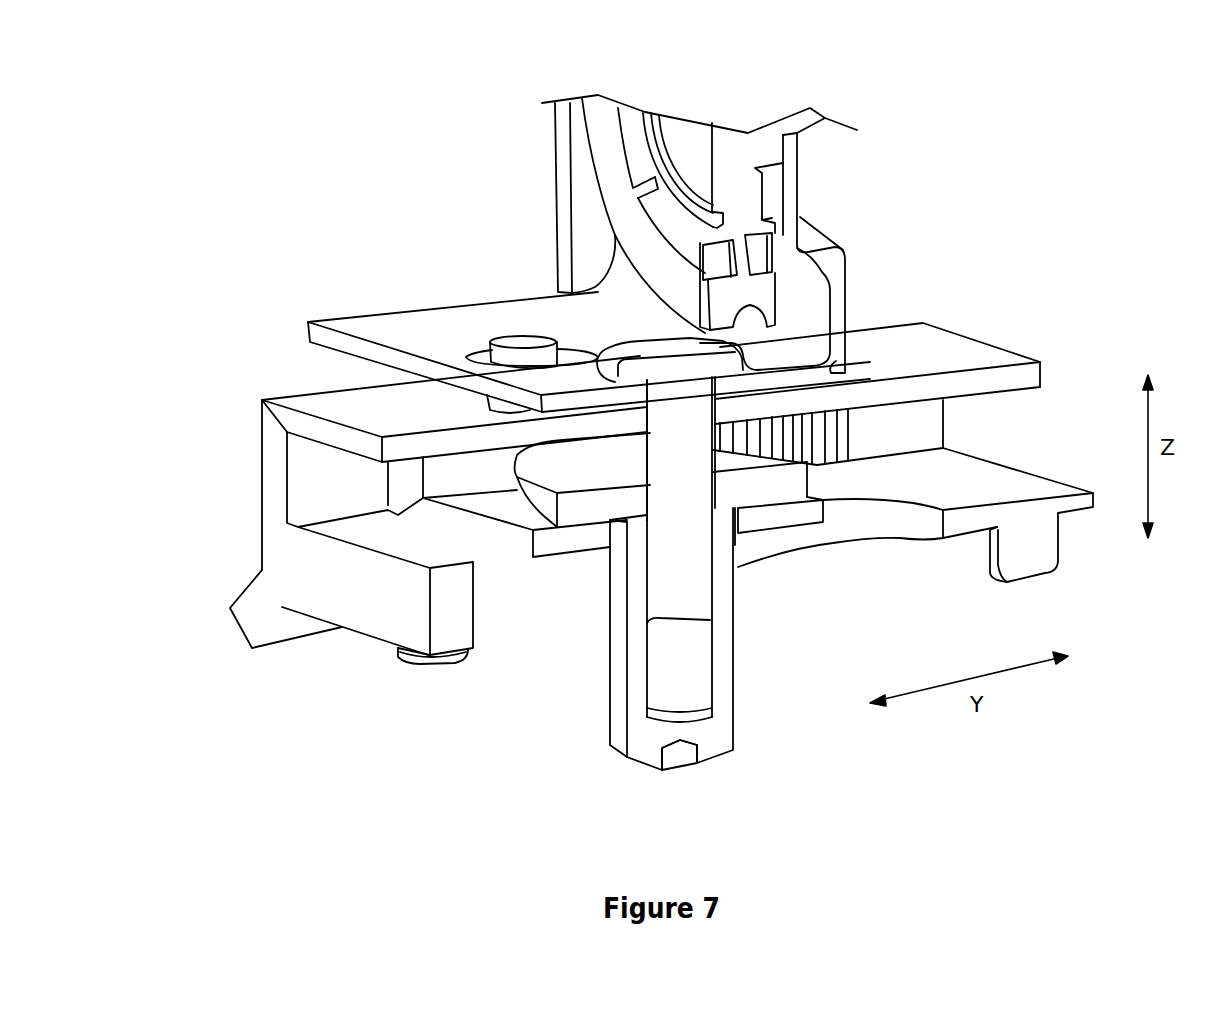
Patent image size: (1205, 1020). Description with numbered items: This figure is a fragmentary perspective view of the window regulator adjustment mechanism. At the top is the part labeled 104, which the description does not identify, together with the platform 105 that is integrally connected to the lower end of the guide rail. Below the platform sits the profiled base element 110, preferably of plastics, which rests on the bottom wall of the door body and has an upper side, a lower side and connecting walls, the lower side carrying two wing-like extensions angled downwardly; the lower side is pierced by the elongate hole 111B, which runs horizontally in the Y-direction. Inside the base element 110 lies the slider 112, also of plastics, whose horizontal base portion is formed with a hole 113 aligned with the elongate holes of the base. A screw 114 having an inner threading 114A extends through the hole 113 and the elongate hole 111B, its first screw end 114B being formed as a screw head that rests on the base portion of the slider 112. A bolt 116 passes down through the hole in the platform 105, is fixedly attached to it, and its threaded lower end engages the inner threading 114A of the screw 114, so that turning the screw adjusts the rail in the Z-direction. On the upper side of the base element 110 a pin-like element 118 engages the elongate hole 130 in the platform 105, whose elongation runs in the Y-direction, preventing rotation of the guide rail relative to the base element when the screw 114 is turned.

The housing 104 is at (682, 128).
The platform 105 is at (358, 320).
The pin-like element 118 is at (512, 345).
The elongate hole 130 is at (572, 353).
The base element 110 is at (283, 557).
The slider 112 is at (433, 515).
The elongate hole 111B is at (480, 617).
The hole 113 is at (735, 540).
The screw 114 is at (720, 732).
The inner threading 114A is at (585, 517).
The first screw end 114B is at (683, 757).
The bolt 116 is at (693, 603).